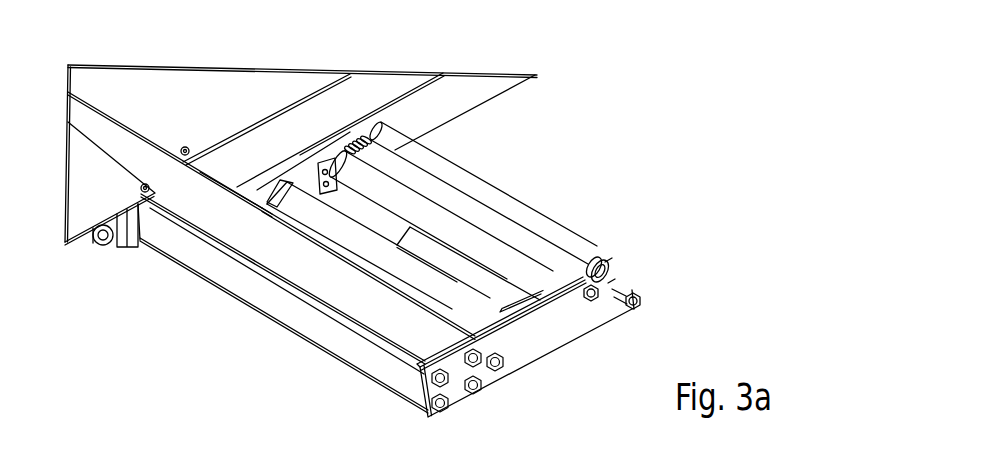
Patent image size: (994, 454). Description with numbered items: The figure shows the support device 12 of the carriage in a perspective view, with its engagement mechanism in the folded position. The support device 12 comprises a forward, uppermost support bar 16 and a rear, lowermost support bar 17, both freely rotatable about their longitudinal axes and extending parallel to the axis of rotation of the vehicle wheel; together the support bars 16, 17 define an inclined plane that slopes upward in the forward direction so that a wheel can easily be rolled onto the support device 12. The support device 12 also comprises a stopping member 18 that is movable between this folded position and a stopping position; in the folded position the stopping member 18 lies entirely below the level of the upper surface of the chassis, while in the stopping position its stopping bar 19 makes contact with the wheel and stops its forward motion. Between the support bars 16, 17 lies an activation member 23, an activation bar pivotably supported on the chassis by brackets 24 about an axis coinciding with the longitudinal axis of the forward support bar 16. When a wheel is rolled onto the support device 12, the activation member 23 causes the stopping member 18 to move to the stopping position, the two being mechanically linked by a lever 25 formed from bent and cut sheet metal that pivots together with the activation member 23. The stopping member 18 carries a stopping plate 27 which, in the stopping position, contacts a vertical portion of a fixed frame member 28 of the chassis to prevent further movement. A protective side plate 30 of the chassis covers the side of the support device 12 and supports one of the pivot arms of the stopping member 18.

The support device 12 is at (576, 46).
The forward, uppermost support bar 16 is at (448, 203).
The rear, lowermost support bar 17 is at (622, 278).
The stopping member 18 is at (552, 281).
The stopping bar 19 is at (400, 202).
The activation member 23 is at (548, 232).
The brackets 24 is at (600, 260).
The lever 25 is at (460, 270).
The stopping plate 27 is at (307, 212).
The fixed frame member 28 is at (370, 305).
The protective side plate 30 is at (532, 350).